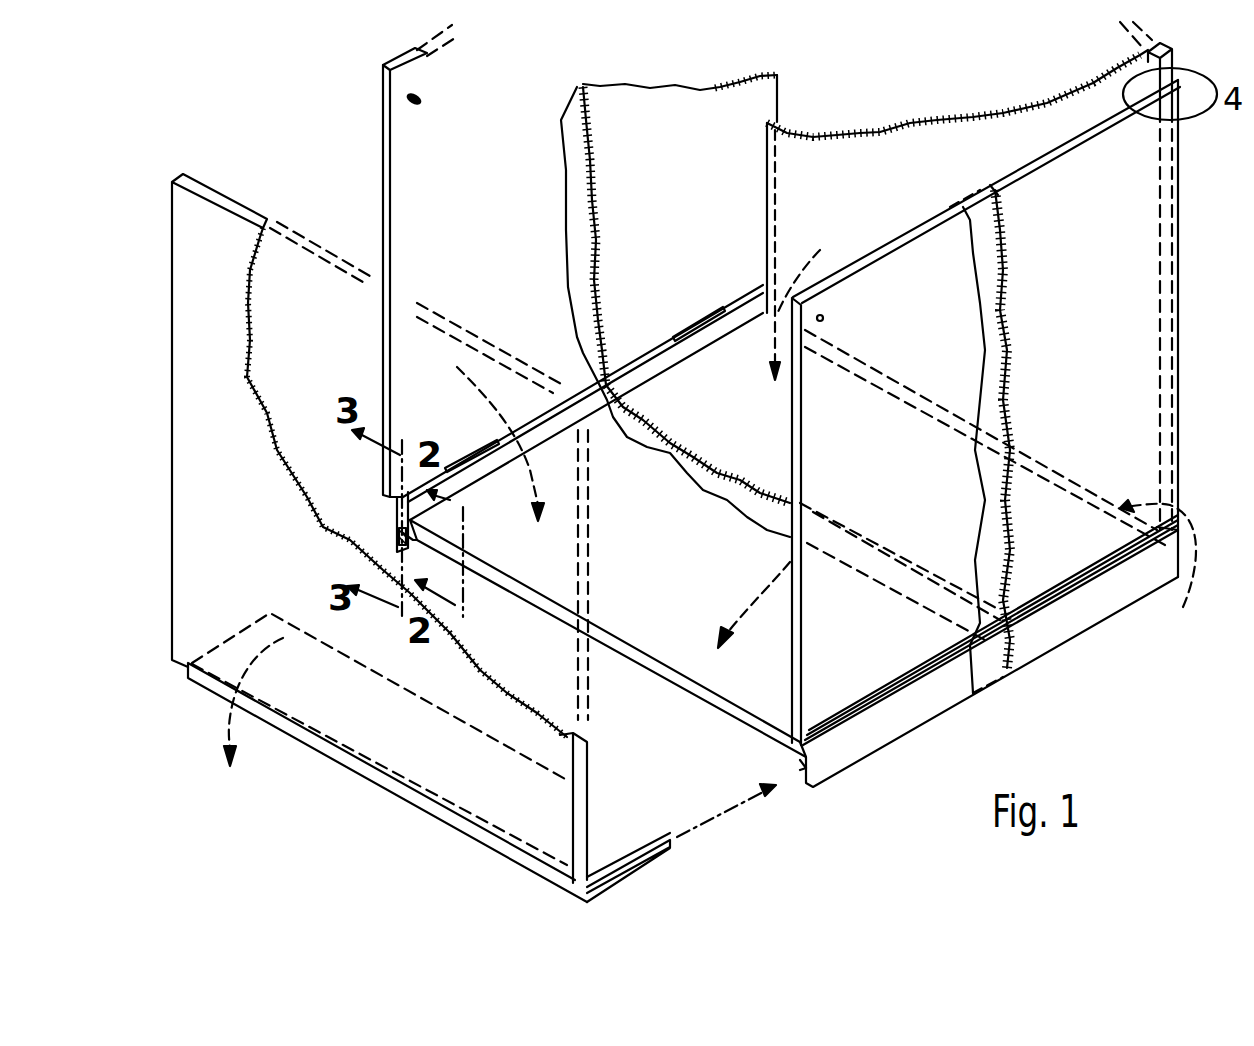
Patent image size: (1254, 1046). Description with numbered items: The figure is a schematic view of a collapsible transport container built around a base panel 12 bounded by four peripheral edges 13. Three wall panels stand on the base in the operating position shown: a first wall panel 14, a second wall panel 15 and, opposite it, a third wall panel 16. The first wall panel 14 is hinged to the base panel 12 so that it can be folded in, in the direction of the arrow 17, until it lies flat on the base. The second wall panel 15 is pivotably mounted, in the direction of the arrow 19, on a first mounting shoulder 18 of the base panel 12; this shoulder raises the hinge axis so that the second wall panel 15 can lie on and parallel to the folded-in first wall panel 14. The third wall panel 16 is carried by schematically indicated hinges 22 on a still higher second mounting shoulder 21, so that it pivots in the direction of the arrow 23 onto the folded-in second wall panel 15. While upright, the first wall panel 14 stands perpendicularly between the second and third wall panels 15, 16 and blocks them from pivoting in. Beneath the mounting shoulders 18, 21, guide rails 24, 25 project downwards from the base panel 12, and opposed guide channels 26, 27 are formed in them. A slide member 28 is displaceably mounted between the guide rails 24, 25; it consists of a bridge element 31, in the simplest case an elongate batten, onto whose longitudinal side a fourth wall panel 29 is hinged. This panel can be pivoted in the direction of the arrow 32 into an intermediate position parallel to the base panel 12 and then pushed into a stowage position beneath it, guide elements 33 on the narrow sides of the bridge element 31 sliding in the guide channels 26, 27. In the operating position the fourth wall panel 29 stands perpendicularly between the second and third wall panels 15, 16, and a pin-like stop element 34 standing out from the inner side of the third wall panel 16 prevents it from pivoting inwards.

The base panel 12 is at (556, 585).
The peripheral edges 13 is at (1120, 576).
The first wall panel 14 is at (995, 137).
The second wall panel 15 is at (913, 262).
The third wall panel 16 is at (752, 97).
The arrow 17 is at (803, 258).
The first mounting shoulder 18 is at (924, 692).
The arrow 19 is at (752, 588).
The second mounting shoulder 21 is at (662, 365).
The hinges 22 is at (694, 322).
The arrow 23 is at (500, 444).
The guide rail 24 is at (852, 762).
The guide rail 25 is at (397, 541).
The guide channel 26 is at (798, 768).
The guide channel 27 is at (405, 537).
The slide member 28 is at (600, 782).
The fourth wall panel 29 is at (226, 220).
The bridge element 31 is at (620, 826).
The arrow 32 is at (228, 733).
The guide elements 33 is at (673, 842).
The stop element 34 is at (415, 104).